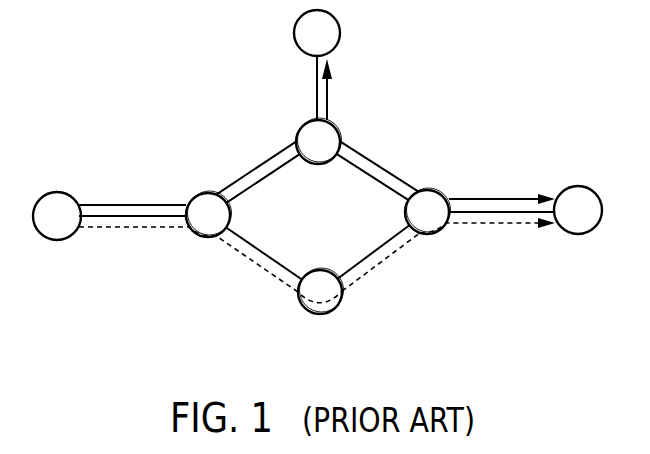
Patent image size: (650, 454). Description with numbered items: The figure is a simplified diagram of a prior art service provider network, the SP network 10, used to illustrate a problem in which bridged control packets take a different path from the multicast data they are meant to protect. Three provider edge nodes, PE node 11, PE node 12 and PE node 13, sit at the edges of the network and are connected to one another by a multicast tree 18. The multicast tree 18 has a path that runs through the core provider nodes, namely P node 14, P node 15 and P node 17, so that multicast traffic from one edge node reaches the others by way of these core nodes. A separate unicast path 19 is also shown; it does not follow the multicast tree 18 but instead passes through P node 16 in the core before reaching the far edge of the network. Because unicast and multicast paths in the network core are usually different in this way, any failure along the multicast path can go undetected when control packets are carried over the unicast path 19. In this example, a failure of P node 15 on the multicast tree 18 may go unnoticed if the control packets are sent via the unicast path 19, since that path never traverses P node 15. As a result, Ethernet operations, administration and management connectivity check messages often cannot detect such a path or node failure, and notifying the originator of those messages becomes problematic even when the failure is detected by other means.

The SP network 10 is at (531, 44).
The PE node 11 is at (57, 191).
The PE node 12 is at (293, 30).
The PE node 13 is at (578, 186).
The P node 14 is at (200, 235).
The P node 15 is at (303, 125).
The P node 16 is at (326, 312).
The P node 17 is at (443, 230).
The multicast tree 18 is at (379, 154).
The unicast path 19 is at (388, 262).